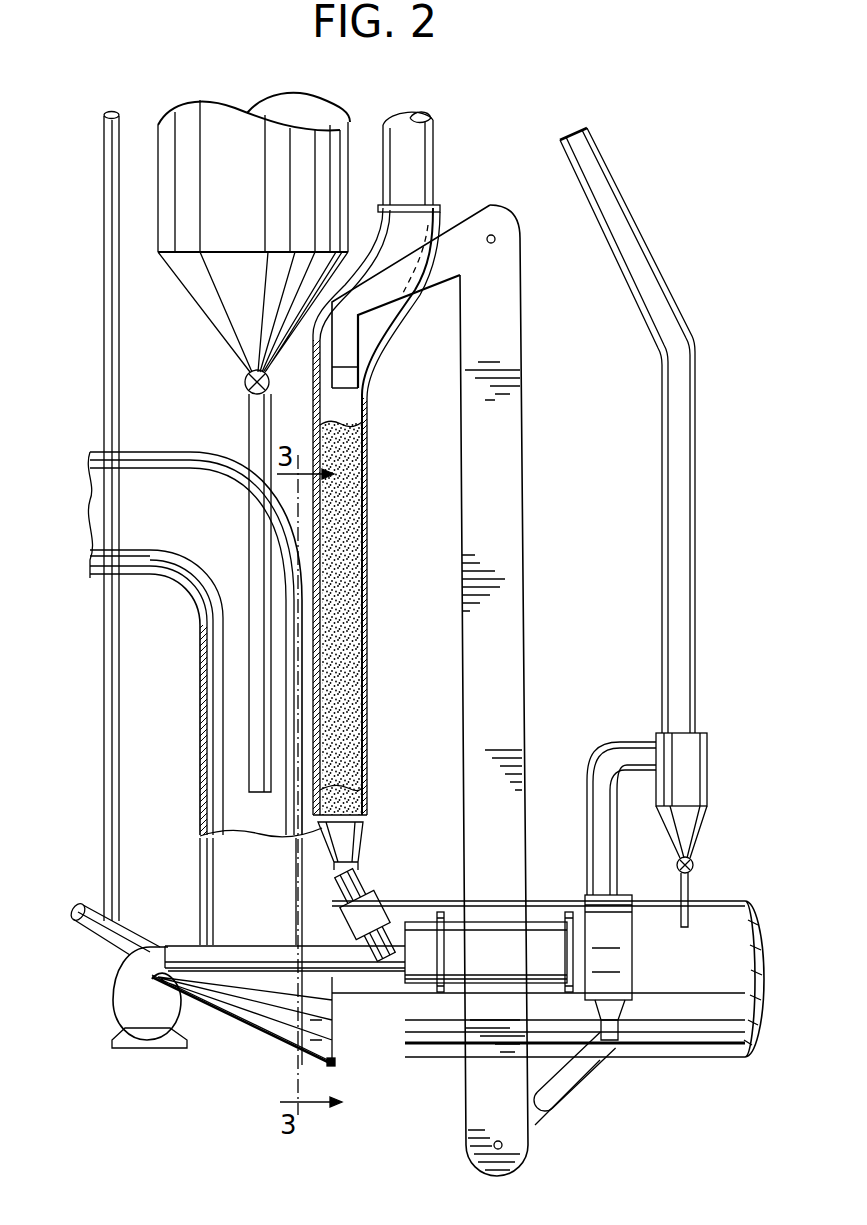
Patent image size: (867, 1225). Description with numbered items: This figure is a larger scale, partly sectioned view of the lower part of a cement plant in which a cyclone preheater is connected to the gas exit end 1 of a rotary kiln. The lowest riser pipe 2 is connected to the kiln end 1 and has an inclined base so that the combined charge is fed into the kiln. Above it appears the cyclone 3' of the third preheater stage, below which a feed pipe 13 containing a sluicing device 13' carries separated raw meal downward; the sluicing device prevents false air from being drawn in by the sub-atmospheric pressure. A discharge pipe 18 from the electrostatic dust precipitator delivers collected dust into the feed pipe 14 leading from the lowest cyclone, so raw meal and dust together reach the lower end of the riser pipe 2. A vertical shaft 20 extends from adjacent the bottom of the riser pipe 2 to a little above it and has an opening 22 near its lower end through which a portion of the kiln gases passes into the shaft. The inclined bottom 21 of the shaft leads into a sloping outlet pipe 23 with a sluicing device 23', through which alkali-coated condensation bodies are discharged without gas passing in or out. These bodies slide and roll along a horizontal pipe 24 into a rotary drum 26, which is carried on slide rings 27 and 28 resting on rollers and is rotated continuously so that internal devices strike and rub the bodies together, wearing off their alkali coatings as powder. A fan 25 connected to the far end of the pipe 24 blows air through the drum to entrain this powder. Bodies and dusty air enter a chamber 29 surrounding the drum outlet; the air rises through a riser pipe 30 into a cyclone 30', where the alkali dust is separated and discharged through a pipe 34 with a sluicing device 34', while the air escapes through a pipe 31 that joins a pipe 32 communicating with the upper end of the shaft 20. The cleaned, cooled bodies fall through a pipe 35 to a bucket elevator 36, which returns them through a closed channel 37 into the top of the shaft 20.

The gas exit end of rotary kiln 1 is at (720, 1042).
The riser pipe 2 is at (200, 818).
The cyclone 3' is at (254, 232).
The feed pipe 13 is at (235, 593).
The sluicing device 13' is at (227, 378).
The feed pipe 14 is at (100, 922).
The discharge pipe 18 is at (105, 683).
The shaft 20 is at (367, 628).
The bottom of shaft 21 is at (350, 848).
The opening 22 is at (335, 790).
The sloping outlet pipe 23 is at (376, 903).
The sluicing device 23' is at (387, 907).
The horizontal pipe 24 is at (268, 948).
The fan 25 is at (120, 1002).
The rotary drum 26 is at (500, 942).
The slide ring 27 is at (442, 990).
The slide ring 28 is at (569, 912).
The chamber 29 is at (622, 960).
The riser pipe 30 is at (600, 818).
The cyclone 30' is at (715, 795).
The pipe 31 is at (697, 625).
The pipe 32 is at (416, 179).
The pipe 34 is at (717, 899).
The sluicing device 34' is at (716, 855).
The pipe 35 is at (577, 1082).
The bucket elevator 36 is at (522, 665).
The closed channel 37 is at (385, 288).